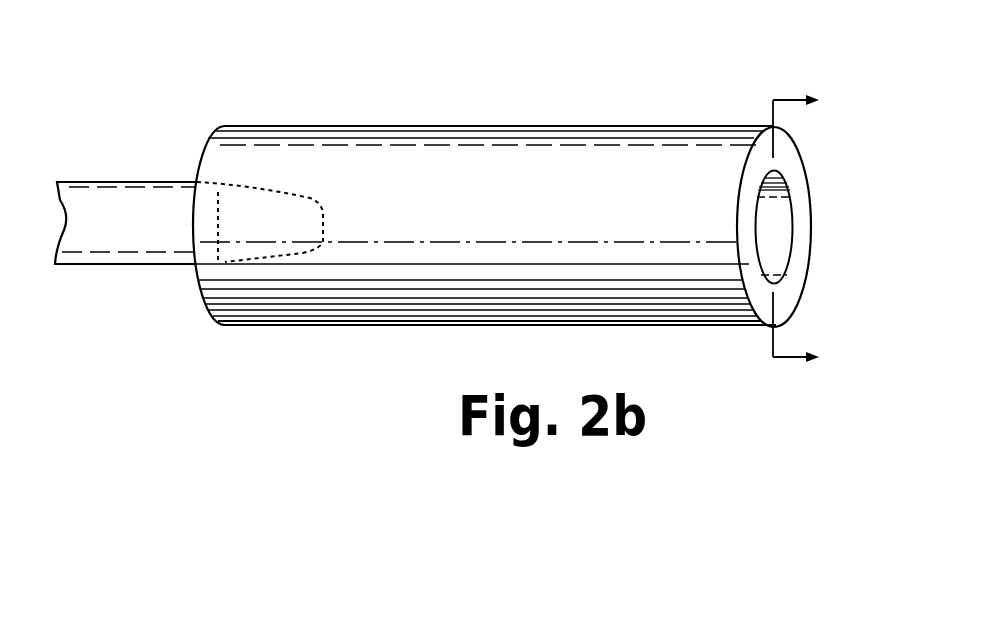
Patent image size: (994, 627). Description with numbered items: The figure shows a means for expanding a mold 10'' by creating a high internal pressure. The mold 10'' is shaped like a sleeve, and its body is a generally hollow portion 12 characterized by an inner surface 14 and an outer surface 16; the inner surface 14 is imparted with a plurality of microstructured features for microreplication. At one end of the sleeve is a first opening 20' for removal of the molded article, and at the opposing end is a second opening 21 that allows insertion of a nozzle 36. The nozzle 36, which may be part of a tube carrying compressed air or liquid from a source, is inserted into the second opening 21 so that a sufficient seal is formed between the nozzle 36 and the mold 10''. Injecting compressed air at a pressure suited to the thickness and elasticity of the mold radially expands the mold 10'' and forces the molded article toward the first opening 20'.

The mold 10'' is at (553, 192).
The hollow portion 12 is at (680, 333).
The inner surface 14 is at (776, 174).
The outer surface 16 is at (360, 158).
The first opening 20' is at (813, 235).
The second opening 21 is at (216, 192).
The nozzle 36 is at (102, 207).